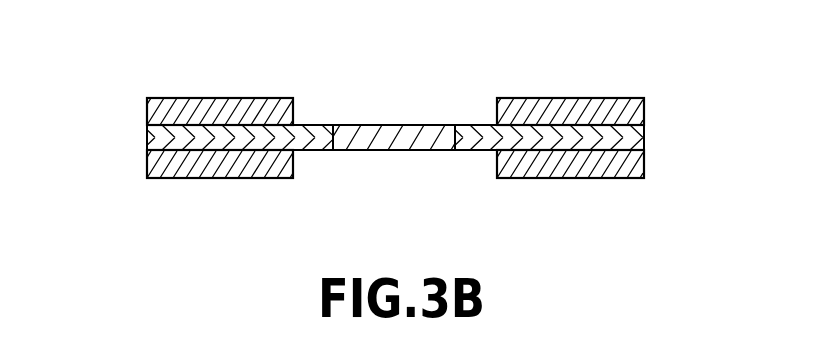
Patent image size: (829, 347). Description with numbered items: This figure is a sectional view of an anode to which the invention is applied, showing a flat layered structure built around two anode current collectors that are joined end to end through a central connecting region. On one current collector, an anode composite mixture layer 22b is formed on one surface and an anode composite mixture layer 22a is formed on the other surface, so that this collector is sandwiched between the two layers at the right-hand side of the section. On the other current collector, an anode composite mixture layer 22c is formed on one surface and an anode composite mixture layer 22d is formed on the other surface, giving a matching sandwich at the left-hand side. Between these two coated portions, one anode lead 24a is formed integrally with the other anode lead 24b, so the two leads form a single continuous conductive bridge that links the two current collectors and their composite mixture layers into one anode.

The anode composite mixture layer 22a is at (556, 178).
The anode composite mixture layer 22b is at (567, 98).
The anode composite mixture layer 22c is at (225, 98).
The anode composite mixture layer 22d is at (215, 178).
The anode lead 24a is at (442, 150).
The anode lead 24b is at (366, 150).